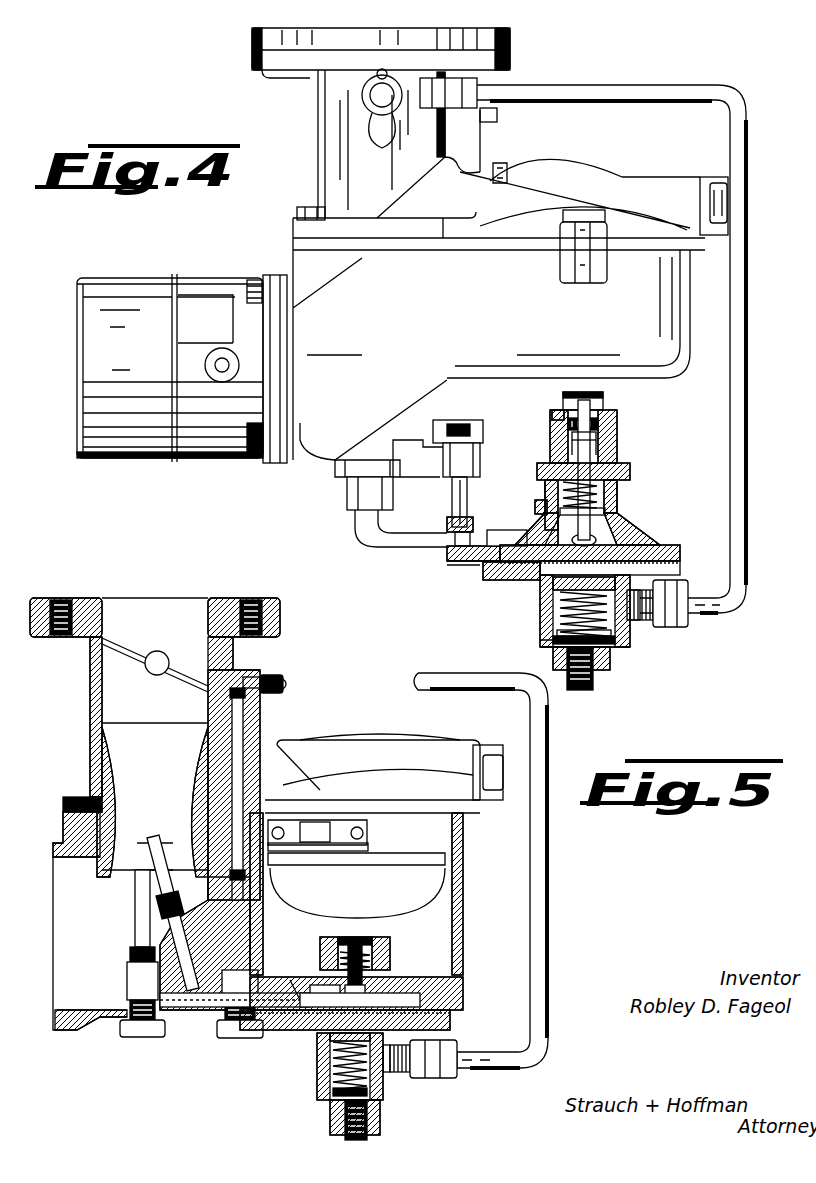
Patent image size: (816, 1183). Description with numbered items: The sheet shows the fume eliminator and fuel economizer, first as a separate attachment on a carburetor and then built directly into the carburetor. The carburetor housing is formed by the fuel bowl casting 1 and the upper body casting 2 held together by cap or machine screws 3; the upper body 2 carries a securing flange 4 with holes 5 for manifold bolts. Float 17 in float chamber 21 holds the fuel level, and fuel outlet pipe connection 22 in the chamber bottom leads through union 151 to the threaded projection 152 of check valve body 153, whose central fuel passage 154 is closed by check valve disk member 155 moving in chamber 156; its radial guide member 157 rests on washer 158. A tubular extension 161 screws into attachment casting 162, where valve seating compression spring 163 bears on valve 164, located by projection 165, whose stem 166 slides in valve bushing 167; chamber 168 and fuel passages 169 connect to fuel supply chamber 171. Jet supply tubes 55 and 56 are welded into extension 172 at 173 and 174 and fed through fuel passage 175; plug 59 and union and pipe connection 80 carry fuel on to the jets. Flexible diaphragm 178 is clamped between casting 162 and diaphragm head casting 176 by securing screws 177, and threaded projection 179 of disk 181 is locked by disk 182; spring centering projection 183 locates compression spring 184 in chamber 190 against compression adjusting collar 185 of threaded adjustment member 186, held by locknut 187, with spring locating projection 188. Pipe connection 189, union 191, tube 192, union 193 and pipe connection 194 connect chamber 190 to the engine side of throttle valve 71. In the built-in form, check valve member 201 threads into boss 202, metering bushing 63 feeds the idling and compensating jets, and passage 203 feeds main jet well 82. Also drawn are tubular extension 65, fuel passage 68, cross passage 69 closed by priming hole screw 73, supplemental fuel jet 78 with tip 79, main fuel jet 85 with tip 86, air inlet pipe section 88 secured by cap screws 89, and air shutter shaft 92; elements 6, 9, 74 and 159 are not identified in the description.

In FIG. 4, the fuel bowl casting 1 is at (293, 252).
In FIG. 5, the fuel bowl casting 1 is at (65, 825).
In FIG. 4, the upper body casting 2 is at (324, 94).
In FIG. 5, the upper body casting 2 is at (92, 710).
In FIG. 4, the cap or machine screws 3 is at (582, 214).
In FIG. 5, the cap or machine screws 3 is at (384, 773).
In FIG. 4, the securing flange 4 is at (402, 42).
In FIG. 5, the securing flange 4 is at (282, 605).
In FIG. 4, the holes 5 is at (302, 210).
In FIG. 5, the holes 5 is at (255, 598).
In FIG. 5, the flange bolt 6 is at (60, 598).
In FIG. 4, the plug 9 is at (714, 184).
In FIG. 5, the float 17 is at (410, 868).
In FIG. 4, the float chamber 21 is at (683, 340).
In FIG. 5, the float chamber 21 is at (455, 900).
In FIG. 4, the fuel outlet pipe connection 22 is at (605, 404).
In FIG. 4, the idling and supplemental fuel supply tube 55 is at (455, 492).
In FIG. 4, the main jet fuel supply tube 56 is at (375, 540).
In FIG. 4, the plug 59 is at (450, 458).
In FIG. 5, the idling and compensating jet regulator 63 is at (268, 975).
In FIG. 5, the tubular extension 65 is at (184, 908).
In FIG. 5, the fuel passage 68 is at (205, 710).
In FIG. 5, the cross passage 69 is at (208, 675).
In FIG. 5, the throttle valve 71 is at (135, 652).
In FIG. 4, the priming hole screw 73 is at (498, 114).
In FIG. 5, the priming hole screw 73 is at (272, 676).
In FIG. 5, the pivot 74 is at (150, 670).
In FIG. 5, the supplemental fuel jet 78 is at (180, 900).
In FIG. 5, the tip 79 is at (165, 855).
In FIG. 4, the union and pipe connection 80 is at (347, 490).
In FIG. 5, the vertical chamber 82 is at (127, 992).
In FIG. 5, the main fuel jet 85 is at (132, 950).
In FIG. 5, the tip 86 is at (135, 885).
In FIG. 4, the air inlet pipe section 88 is at (195, 290).
In FIG. 4, the cap screws 89 is at (262, 455).
In FIG. 4, the air shutter shaft 92 is at (220, 368).
In FIG. 4, the union 151 is at (552, 430).
In FIG. 4, the threaded projection 152 is at (552, 445).
In FIG. 4, the check valve body 153 is at (550, 458).
In FIG. 4, the central fuel passage 154 is at (615, 418).
In FIG. 5, the central fuel passage 154 is at (372, 938).
In FIG. 4, the check valve disk member 155 is at (614, 432).
In FIG. 5, the check valve disk member 155 is at (340, 940).
In FIG. 4, the chamber 156 is at (614, 446).
In FIG. 5, the chamber 156 is at (390, 952).
In FIG. 4, the radial guide member 157 is at (545, 490).
In FIG. 4, the washer 158 is at (536, 505).
In FIG. 4, the packing 159 is at (556, 414).
In FIG. 5, the packing 159 is at (390, 940).
In FIG. 4, the tubular extension 161 is at (540, 525).
In FIG. 4, the attachment casting 162 is at (680, 548).
In FIG. 4, the valve seating compression spring 163 is at (630, 472).
In FIG. 4, the valve 164 is at (618, 500).
In FIG. 5, the valve 164 is at (390, 962).
In FIG. 4, the spring locating and guiding projection 165 is at (618, 490).
In FIG. 4, the guiding and actuating stem 166 is at (606, 513).
In FIG. 4, the valve bushing 167 is at (500, 576).
In FIG. 4, the chamber 168 is at (548, 525).
In FIG. 5, the chamber 168 is at (330, 975).
In FIG. 4, the fuel passages 169 is at (630, 532).
In FIG. 5, the fuel passages 169 is at (345, 992).
In FIG. 4, the fuel supply chamber 171 is at (636, 540).
In FIG. 5, the fuel supply chamber 171 is at (450, 992).
In FIG. 4, the extension 172 is at (445, 560).
In FIG. 4, the weld 173 is at (448, 520).
In FIG. 4, the weld 174 is at (410, 552).
In FIG. 4, the fuel passage 175 is at (462, 548).
In FIG. 5, the fuel passage 175 is at (310, 985).
In FIG. 4, the diaphragm head casting 176 is at (470, 568).
In FIG. 5, the diaphragm head casting 176 is at (450, 1017).
In FIG. 4, the securing screws 177 is at (672, 594).
In FIG. 5, the securing screws 177 is at (455, 1042).
In FIG. 4, the flexible diaphragm 178 is at (680, 566).
In FIG. 4, the threaded projection 179 is at (545, 583).
In FIG. 5, the threaded projection 179 is at (320, 1040).
In FIG. 4, the disk 181 is at (545, 595).
In FIG. 5, the disk 181 is at (322, 1048).
In FIG. 4, the disk 182 is at (572, 540).
In FIG. 4, the spring centering projection 183 is at (556, 612).
In FIG. 5, the spring centering projection 183 is at (325, 1068).
In FIG. 4, the compression spring 184 is at (548, 628).
In FIG. 4, the compression adjusting collar 185 is at (560, 645).
In FIG. 4, the threaded adjustment member 186 is at (580, 690).
In FIG. 5, the threaded adjustment member 186 is at (335, 1100).
In FIG. 4, the locknut 187 is at (608, 668).
In FIG. 5, the locknut 187 is at (330, 1120).
In FIG. 4, the spring locating projection 188 is at (630, 640).
In FIG. 5, the spring locating projection 188 is at (385, 1092).
In FIG. 4, the pipe connection 189 is at (640, 622).
In FIG. 5, the pipe connection 189 is at (398, 1073).
In FIG. 4, the chamber 190 is at (556, 634).
In FIG. 5, the chamber 190 is at (328, 1086).
In FIG. 4, the union 191 is at (688, 620).
In FIG. 5, the union 191 is at (455, 1070).
In FIG. 4, the tube 192 is at (692, 92).
In FIG. 5, the tube 192 is at (425, 673).
In FIG. 4, the union 193 is at (495, 85).
In FIG. 4, the pipe connection 194 is at (398, 108).
In FIG. 5, the check valve member 201 is at (318, 945).
In FIG. 5, the boss 202 is at (320, 955).
In FIG. 5, the passage 203 is at (215, 1015).